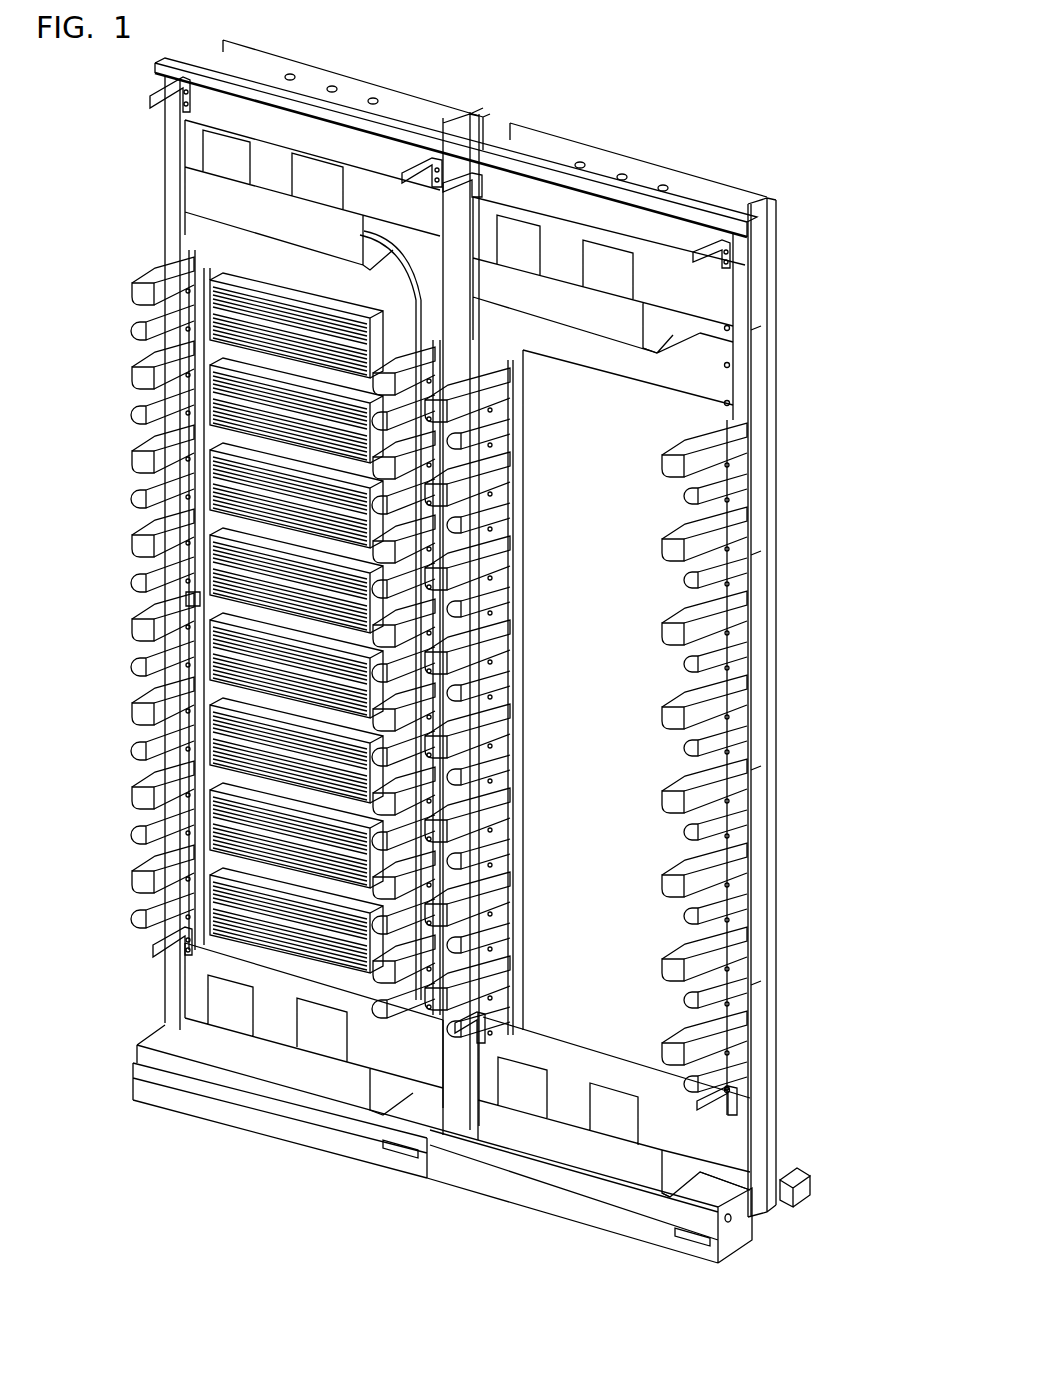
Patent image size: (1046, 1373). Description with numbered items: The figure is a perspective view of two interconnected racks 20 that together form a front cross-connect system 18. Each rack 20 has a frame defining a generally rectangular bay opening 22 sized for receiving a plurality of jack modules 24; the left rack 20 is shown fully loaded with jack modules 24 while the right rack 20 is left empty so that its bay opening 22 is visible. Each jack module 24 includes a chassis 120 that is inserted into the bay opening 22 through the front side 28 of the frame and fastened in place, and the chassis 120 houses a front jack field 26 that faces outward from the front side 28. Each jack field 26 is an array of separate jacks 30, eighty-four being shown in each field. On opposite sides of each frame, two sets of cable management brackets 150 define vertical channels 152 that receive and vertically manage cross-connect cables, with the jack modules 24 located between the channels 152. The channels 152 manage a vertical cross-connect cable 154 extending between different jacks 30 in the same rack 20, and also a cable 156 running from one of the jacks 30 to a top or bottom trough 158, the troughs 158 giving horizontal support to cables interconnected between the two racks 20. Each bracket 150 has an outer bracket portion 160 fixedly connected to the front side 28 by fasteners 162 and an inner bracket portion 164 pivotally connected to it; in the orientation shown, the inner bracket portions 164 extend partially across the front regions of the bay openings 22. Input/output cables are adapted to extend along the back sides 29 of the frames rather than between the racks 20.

The front cross-connect system 18 is at (793, 168).
The rack 20 is at (338, 62).
The bay opening 22 is at (625, 918).
The jack module 24 is at (212, 686).
The front jack field 26 is at (265, 773).
The front side 28 is at (275, 1143).
The back side 29 is at (780, 226).
The jack 30 is at (265, 795).
The chassis 120 is at (191, 602).
The cable management bracket 150 is at (133, 466).
The vertical channel 152 is at (151, 273).
The cable 154 is at (482, 661).
The cable 156 is at (433, 308).
The trough 158 is at (678, 333).
The outer bracket portion 160 is at (142, 450).
The fastener 162 is at (756, 778).
The inner bracket portion 164 is at (171, 496).